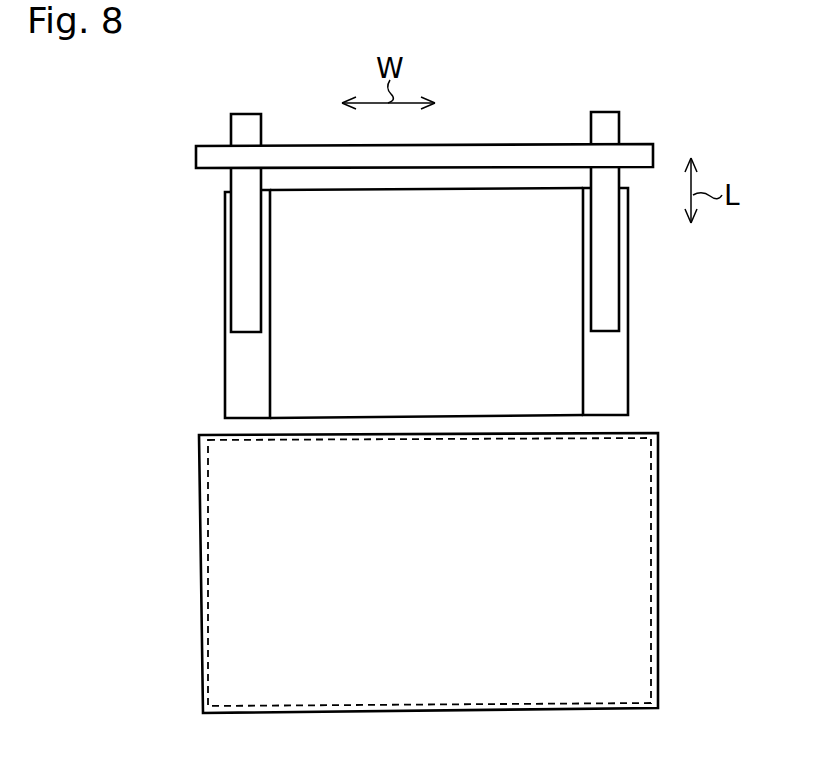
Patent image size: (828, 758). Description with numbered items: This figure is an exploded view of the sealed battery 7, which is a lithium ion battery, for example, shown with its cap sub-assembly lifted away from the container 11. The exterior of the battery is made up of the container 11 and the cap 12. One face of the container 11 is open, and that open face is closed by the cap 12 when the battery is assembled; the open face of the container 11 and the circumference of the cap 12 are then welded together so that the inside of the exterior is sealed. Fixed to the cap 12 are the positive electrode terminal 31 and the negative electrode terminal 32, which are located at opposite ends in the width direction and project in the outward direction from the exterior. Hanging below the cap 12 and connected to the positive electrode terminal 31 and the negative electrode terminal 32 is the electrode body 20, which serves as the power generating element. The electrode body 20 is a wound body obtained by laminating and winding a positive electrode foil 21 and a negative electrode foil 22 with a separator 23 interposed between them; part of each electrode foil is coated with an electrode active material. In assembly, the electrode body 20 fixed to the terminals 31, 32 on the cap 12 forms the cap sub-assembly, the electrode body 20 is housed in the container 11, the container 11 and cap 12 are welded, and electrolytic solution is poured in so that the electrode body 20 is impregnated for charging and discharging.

The sealed battery 7 is at (514, 104).
The container 11 is at (198, 452).
The cap 12 is at (205, 157).
The electrode body 20 is at (206, 322).
The positive electrode foil 21 is at (240, 372).
The negative electrode foil 22 is at (617, 378).
The separator 23 is at (552, 395).
The positive electrode terminal 31 is at (243, 256).
The negative electrode terminal 32 is at (607, 255).